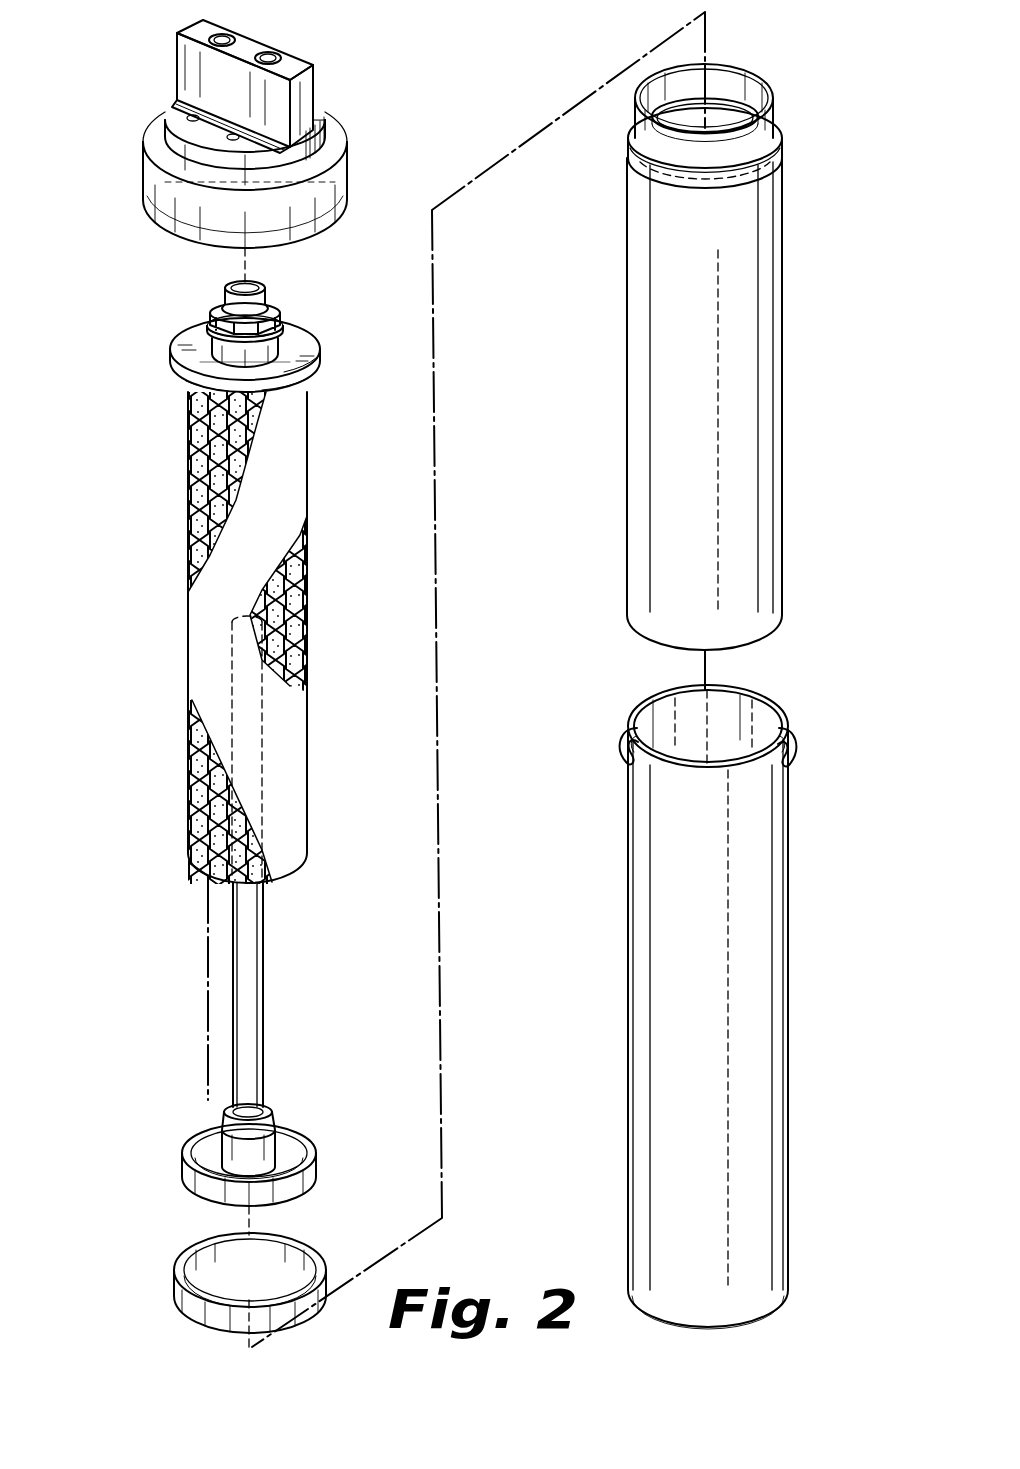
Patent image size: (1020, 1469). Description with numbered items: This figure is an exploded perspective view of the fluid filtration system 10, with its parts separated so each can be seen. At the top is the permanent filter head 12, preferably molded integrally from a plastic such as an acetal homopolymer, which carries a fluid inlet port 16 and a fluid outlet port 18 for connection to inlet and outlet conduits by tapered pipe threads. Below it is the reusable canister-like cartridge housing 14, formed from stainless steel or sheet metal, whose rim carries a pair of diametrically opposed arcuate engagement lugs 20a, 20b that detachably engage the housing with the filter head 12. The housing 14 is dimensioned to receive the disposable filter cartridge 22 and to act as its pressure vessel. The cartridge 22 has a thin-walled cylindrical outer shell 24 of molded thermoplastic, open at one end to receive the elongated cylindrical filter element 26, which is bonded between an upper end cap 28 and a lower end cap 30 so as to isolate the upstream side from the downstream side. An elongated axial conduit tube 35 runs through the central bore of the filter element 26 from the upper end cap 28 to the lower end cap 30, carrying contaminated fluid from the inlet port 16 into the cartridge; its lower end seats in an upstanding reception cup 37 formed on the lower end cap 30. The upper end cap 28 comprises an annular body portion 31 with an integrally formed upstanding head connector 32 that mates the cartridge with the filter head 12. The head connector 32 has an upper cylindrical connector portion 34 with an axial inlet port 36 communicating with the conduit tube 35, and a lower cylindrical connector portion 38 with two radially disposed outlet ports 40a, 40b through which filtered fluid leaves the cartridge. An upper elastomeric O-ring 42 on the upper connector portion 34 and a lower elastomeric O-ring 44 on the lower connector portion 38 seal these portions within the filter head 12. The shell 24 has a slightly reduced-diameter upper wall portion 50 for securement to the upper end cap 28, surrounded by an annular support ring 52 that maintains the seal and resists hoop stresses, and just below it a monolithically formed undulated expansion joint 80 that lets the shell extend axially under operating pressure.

The fluid filtration system 10 is at (94, 246).
The filter head 12 is at (340, 162).
The cartridge housing 14 is at (630, 995).
The fluid inlet port 16 is at (282, 58).
The fluid outlet port 18 is at (178, 30).
The arcuate engagement lug 20a is at (620, 740).
The arcuate engagement lug 20b is at (795, 742).
The filter cartridge 22 is at (157, 738).
The cylindrical outer shell 24 is at (630, 405).
The filter element 26 is at (188, 555).
The upper end cap 28 is at (164, 353).
The lower end cap 30 is at (172, 1142).
The annular body portion 31 is at (296, 340).
The head connector 32 is at (300, 392).
The upper cylindrical connector portion 34 is at (215, 378).
The axial conduit tube 35 is at (252, 932).
The axial inlet port 36 is at (236, 283).
The reception cup 37 is at (283, 1138).
The lower cylindrical connector portion 38 is at (308, 370).
The radially disposed outlet port 40a is at (212, 330).
The radially disposed outlet port 40b is at (282, 326).
The upper elastomeric O-ring 42 is at (260, 308).
The lower elastomeric O-ring 44 is at (200, 348).
The upper wall portion 50 is at (765, 130).
The annular support ring 52 is at (168, 1262).
The expansion joint 80 is at (633, 172).